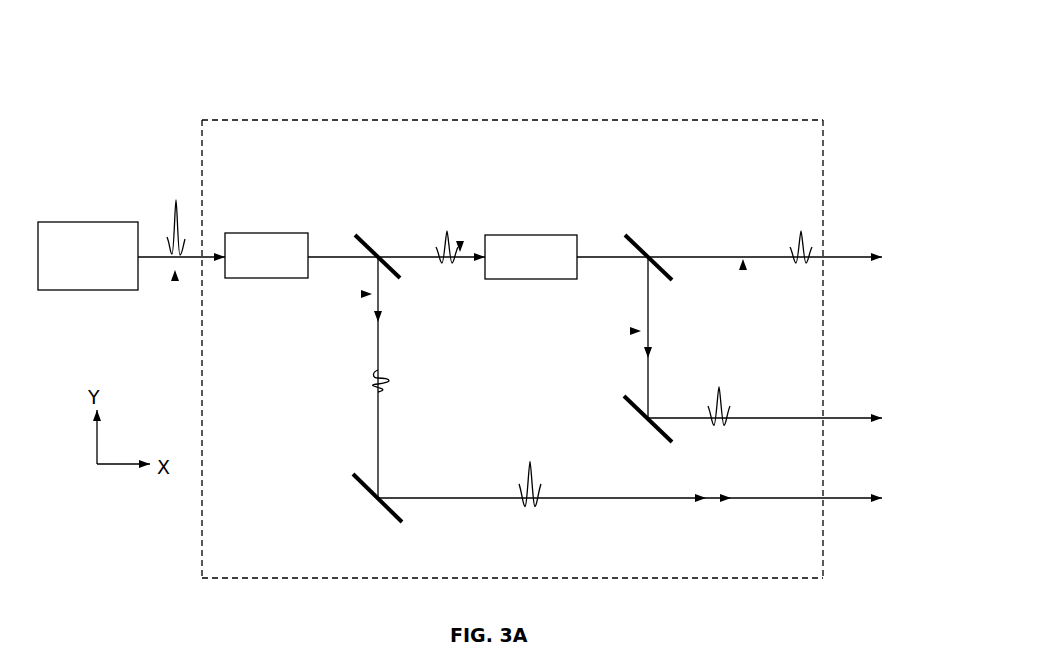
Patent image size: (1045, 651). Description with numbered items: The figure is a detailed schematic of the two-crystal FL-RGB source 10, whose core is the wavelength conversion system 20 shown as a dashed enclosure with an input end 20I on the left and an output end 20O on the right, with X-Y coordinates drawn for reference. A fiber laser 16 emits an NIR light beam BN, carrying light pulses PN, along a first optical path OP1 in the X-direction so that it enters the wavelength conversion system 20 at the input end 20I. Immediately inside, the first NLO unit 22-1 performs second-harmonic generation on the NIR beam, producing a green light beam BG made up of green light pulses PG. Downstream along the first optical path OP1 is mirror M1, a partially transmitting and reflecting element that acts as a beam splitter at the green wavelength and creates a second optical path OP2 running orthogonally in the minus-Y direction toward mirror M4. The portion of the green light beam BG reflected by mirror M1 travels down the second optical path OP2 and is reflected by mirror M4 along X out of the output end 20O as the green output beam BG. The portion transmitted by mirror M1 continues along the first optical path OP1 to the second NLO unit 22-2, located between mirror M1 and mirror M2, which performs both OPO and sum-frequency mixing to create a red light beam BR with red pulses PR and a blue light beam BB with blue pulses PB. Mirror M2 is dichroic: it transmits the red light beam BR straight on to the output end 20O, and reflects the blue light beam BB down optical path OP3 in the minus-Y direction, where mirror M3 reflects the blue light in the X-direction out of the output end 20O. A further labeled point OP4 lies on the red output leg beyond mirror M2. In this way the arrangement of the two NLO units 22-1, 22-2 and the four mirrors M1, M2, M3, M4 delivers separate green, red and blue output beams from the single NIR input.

The laser system 10 is at (184, 42).
The fiber laser 16 is at (101, 268).
The wavelength conversion system 20 is at (805, 157).
The input end 20I is at (202, 127).
The output end 20O is at (823, 142).
The first NLO unit 22-1 is at (290, 266).
The second NLO unit 22-2 is at (554, 267).
The mirror M1 is at (360, 234).
The mirror M2 is at (644, 233).
The mirror M3 is at (670, 432).
The mirror M4 is at (352, 484).
The light pulses PN is at (173, 208).
The NIR light beam BN is at (156, 255).
The light pulses PG is at (440, 246).
The green light beam BG is at (325, 255).
The light pulses PR is at (797, 246).
The red light beam BR is at (593, 257).
The light pulses PB is at (719, 392).
The blue light beam BB is at (742, 418).
The first optical path OP1 is at (175, 282).
The second optical path OP2 is at (361, 294).
The optical path OP3 is at (630, 331).
The fourth optical path point OP4 is at (743, 270).